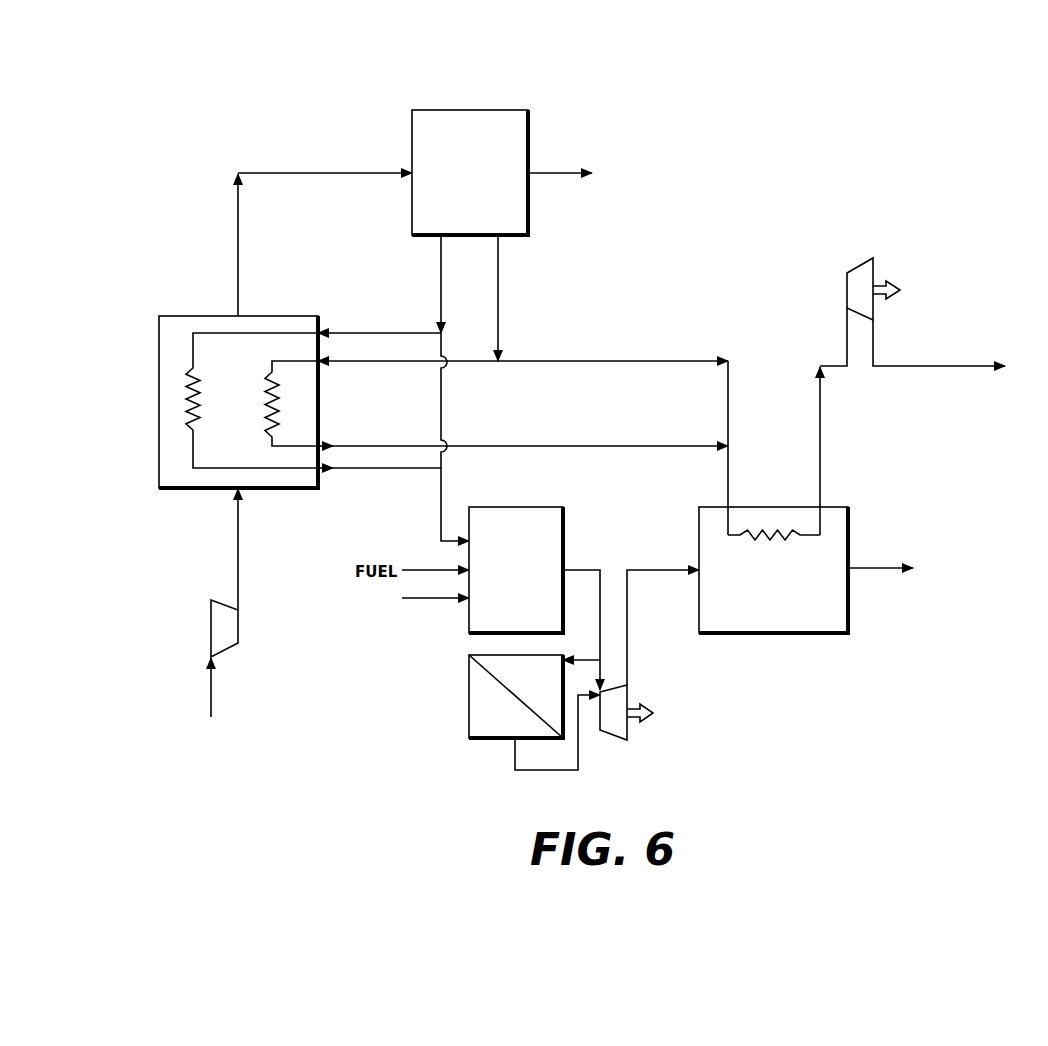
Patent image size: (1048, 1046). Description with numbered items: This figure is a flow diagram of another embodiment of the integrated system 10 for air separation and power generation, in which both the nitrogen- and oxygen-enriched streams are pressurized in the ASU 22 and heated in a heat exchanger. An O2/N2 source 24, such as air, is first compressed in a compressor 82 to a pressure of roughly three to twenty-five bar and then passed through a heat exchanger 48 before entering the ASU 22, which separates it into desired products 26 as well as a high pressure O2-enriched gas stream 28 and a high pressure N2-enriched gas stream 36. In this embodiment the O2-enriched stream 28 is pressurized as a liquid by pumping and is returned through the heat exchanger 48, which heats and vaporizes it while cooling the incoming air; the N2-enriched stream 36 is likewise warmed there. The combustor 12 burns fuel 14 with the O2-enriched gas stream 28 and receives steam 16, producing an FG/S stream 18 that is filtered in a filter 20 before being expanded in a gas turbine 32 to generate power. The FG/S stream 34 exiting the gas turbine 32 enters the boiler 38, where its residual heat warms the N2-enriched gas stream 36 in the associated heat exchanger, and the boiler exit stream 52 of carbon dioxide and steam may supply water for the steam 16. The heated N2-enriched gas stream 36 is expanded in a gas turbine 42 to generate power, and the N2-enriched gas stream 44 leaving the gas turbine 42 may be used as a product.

The integrated system 10 is at (918, 118).
The combustor 12 is at (545, 507).
The fuel 14 is at (422, 568).
The steam 16 is at (422, 603).
The FG/S stream 18 is at (580, 567).
The filter 20 is at (492, 740).
The ASU 22 is at (500, 110).
The O2/N2 source 24 is at (370, 170).
The desired products 26 is at (560, 172).
The high pressure O2-enriched gas stream 28 is at (440, 278).
The gas turbine 32 is at (620, 740).
The FG/S stream exiting the power generating means 34 is at (668, 566).
The high pressure N2-enriched gas stream 36 is at (498, 292).
The boiler 38 is at (712, 507).
The gas turbine 42 is at (850, 275).
The N2-enriched gas stream exiting the gas turbine 44 is at (925, 366).
The heat exchanger 48 is at (158, 437).
The FG/S stream exiting the boiler 52 is at (865, 568).
The compressor 82 is at (246, 631).